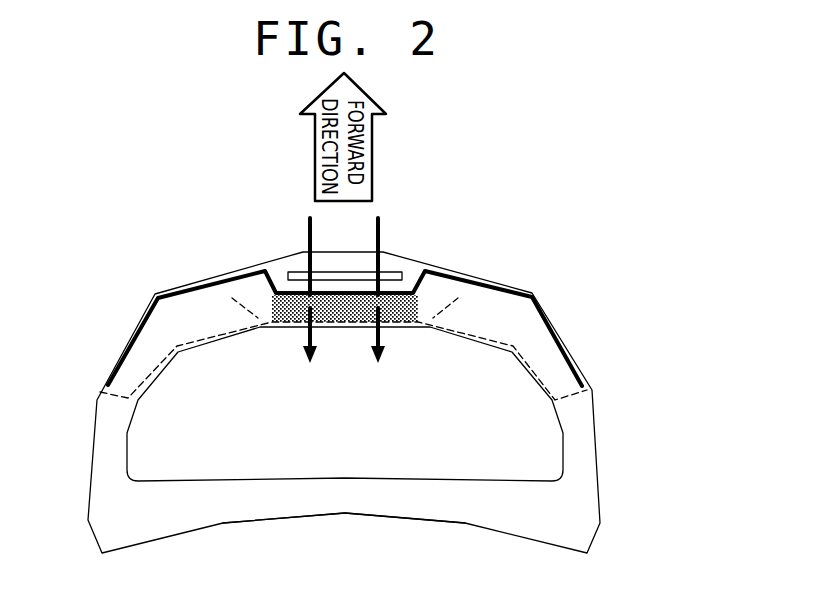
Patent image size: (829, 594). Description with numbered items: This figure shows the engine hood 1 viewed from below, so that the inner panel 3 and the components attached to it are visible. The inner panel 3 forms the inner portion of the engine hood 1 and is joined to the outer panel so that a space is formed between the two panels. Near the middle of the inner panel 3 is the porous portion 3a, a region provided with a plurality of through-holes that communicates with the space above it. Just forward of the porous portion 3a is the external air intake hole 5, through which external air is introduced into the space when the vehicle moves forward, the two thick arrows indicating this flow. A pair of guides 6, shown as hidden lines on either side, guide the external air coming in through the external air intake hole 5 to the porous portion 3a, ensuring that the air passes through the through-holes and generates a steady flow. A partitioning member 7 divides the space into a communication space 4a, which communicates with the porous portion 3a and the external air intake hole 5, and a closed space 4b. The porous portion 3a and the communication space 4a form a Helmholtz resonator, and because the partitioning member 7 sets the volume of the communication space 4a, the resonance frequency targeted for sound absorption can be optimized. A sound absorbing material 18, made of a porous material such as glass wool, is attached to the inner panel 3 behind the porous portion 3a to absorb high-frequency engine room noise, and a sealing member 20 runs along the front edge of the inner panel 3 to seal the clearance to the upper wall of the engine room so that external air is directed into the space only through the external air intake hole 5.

The engine hood 1 is at (198, 256).
The inner panel 3 is at (95, 467).
The porous portion 3a is at (288, 323).
The communication space 4a is at (536, 331).
The closed space 4b is at (492, 505).
The external air intake hole 5 is at (344, 271).
The guides 6 is at (256, 317).
The partitioning member 7 is at (158, 357).
The sound absorbing material 18 is at (347, 455).
The sealing member 20 is at (493, 288).